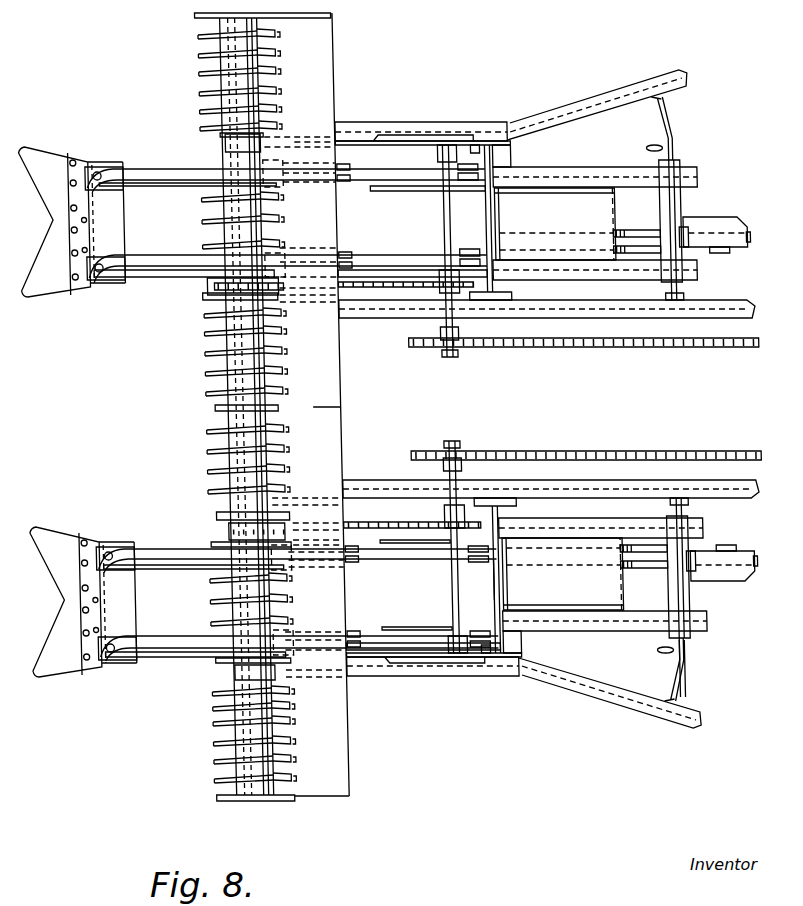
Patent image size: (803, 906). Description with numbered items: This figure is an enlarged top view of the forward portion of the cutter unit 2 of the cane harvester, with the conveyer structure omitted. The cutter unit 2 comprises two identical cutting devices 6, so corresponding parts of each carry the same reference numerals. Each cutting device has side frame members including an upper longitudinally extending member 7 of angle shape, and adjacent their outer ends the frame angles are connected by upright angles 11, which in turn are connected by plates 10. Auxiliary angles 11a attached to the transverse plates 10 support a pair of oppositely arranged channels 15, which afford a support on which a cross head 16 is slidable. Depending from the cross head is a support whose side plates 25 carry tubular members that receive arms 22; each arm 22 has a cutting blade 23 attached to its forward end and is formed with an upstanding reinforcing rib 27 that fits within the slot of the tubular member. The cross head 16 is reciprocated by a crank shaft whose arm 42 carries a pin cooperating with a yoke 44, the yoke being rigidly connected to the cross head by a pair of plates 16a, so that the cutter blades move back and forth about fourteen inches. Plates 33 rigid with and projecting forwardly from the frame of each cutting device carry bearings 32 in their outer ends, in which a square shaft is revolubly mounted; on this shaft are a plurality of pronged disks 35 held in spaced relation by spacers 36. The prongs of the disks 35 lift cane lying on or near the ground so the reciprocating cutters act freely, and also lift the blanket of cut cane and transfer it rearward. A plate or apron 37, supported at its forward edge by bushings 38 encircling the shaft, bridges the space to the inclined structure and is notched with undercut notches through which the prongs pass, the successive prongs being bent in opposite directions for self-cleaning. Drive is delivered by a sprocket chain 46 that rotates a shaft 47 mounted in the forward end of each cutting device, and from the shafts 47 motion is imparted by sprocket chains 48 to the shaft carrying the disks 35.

The cutter unit 2 is at (565, 98).
The cutting device 6 is at (718, 304).
The upper longitudinally extending member 7 is at (508, 124).
The plate 10 is at (500, 597).
The upright angle 11 is at (470, 145).
The auxiliary angle 11a is at (498, 163).
The channel 15 is at (563, 176).
The cross head 16 is at (595, 190).
The plate 16a is at (620, 236).
The arm 22 is at (135, 168).
The cutting blade 23 is at (58, 225).
The side plate 25 is at (68, 528).
The reinforcing rib 27 is at (160, 184).
The bearing 32 is at (228, 144).
The plate 33 is at (362, 140).
The pronged disk 35 is at (280, 102).
The spacer 36 is at (206, 55).
The plate or apron 37 is at (346, 760).
The bushing 38 is at (218, 375).
The arm 42 is at (702, 220).
The yoke 44 is at (714, 252).
The sprocket chain 46 is at (696, 346).
The shaft 47 is at (446, 218).
The sprocket chain 48 is at (397, 290).